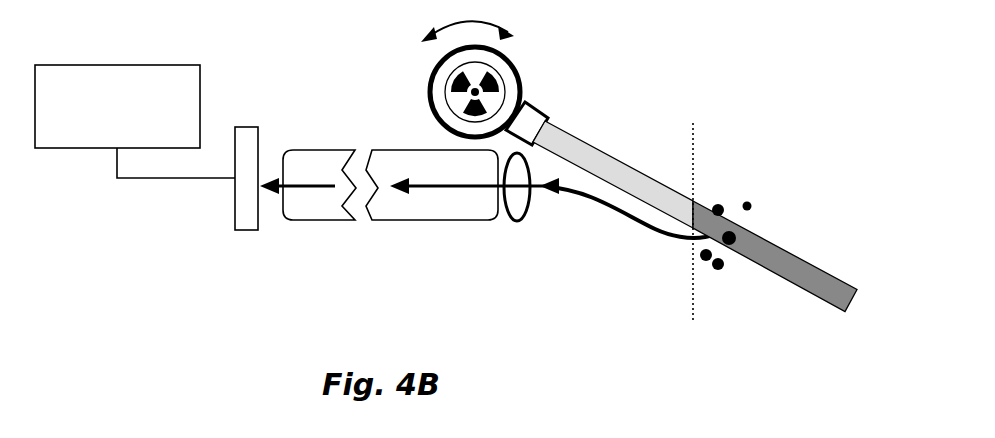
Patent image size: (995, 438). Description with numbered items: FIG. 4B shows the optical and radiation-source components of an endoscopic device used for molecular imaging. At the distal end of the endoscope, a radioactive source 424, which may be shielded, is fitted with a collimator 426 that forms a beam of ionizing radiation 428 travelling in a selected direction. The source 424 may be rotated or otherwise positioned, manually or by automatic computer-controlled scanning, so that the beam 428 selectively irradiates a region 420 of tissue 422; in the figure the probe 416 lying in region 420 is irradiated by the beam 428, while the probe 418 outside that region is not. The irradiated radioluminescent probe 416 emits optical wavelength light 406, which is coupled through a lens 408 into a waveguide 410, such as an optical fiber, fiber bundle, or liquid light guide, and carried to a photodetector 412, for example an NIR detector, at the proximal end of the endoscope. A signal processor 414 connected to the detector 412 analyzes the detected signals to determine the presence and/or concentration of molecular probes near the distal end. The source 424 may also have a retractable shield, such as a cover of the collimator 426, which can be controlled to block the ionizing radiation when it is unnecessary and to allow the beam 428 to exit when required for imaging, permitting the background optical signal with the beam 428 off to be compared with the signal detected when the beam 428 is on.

The light 406 is at (607, 195).
The lens 408 is at (518, 223).
The waveguide 410 is at (340, 150).
The photodetector 412 is at (233, 210).
The signal processor 414 is at (135, 121).
The radioluminescent probe 416 is at (745, 235).
The probe 418 is at (720, 205).
The region 420 is at (813, 278).
The tissue 422 is at (722, 223).
The radioactive source 424 is at (421, 90).
The collimator 426 is at (532, 100).
The beam of ionizing radiation 428 is at (593, 140).